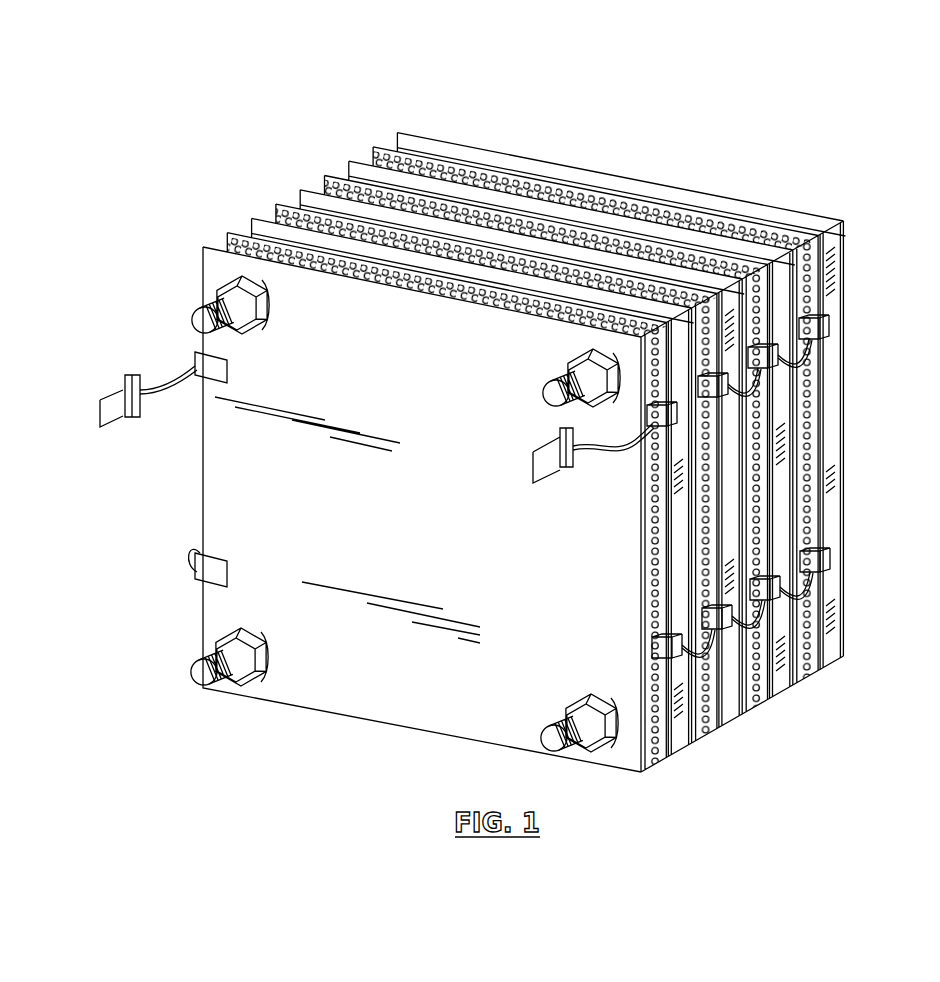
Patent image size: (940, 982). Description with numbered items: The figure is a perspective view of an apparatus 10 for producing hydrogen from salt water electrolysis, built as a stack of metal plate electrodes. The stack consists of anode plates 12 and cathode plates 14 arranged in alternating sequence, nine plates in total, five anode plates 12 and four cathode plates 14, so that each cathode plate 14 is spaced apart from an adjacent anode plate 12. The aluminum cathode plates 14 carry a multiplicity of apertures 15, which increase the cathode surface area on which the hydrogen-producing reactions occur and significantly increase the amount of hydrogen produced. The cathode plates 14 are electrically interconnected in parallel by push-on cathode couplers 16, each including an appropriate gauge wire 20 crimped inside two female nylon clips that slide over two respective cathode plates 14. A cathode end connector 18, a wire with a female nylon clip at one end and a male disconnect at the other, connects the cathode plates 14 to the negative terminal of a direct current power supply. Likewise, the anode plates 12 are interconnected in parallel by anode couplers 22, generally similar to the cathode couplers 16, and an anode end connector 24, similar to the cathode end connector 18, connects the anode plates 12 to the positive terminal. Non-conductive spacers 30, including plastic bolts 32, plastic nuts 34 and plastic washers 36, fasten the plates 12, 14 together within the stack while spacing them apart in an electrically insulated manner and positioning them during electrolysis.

The apparatus 10 is at (752, 178).
The anode plate 12 is at (393, 137).
The cathode plate 14 is at (642, 255).
The apertures 15 is at (565, 303).
The cathode coupler 16 is at (765, 343).
The cathode end connector 18 is at (538, 470).
The wire 20 is at (710, 393).
The anode coupler 22 is at (218, 570).
The anode end connector 24 is at (109, 412).
The non-conductive spacer 30 is at (487, 544).
The plastic bolt 32 is at (548, 741).
The plastic nut 34 is at (613, 740).
The plastic washer 36 is at (622, 705).